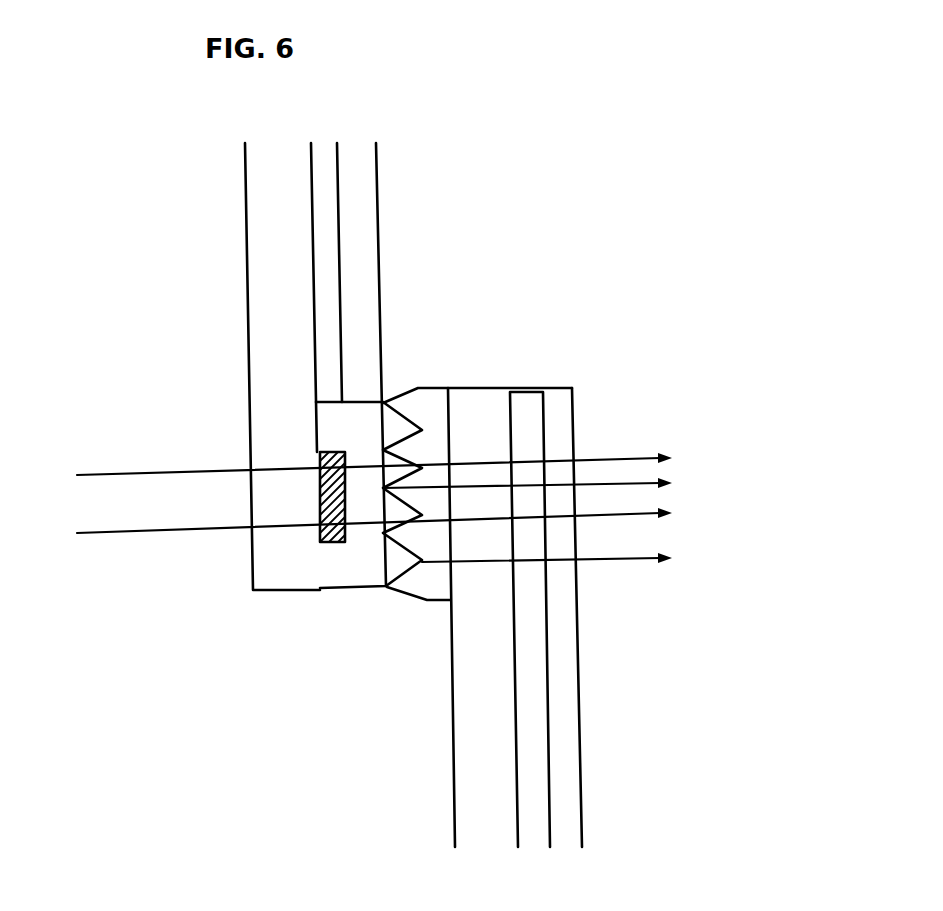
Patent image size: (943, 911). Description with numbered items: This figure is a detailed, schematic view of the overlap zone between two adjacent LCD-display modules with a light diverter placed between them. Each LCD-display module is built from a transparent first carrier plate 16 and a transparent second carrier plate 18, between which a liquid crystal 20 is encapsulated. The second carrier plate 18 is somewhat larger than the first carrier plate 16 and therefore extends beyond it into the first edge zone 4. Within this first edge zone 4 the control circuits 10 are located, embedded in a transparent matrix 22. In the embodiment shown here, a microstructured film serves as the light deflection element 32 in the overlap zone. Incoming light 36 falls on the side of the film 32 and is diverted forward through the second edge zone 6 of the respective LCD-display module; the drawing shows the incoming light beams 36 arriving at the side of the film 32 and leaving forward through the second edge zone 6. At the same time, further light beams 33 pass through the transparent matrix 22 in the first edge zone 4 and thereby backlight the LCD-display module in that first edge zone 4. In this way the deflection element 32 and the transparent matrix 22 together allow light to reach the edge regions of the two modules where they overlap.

The first edge zone 4 is at (228, 616).
The second edge zone 6 is at (463, 373).
The control circuits 10 is at (97, 618).
The first carrier plate 16 is at (355, 228).
The second carrier plate 18 is at (280, 308).
The liquid crystal 20 is at (312, 197).
The transparent matrix 22 is at (350, 432).
The light deflection element 32 is at (422, 411).
The light beams 33 is at (333, 498).
The light beams 36 is at (383, 493).